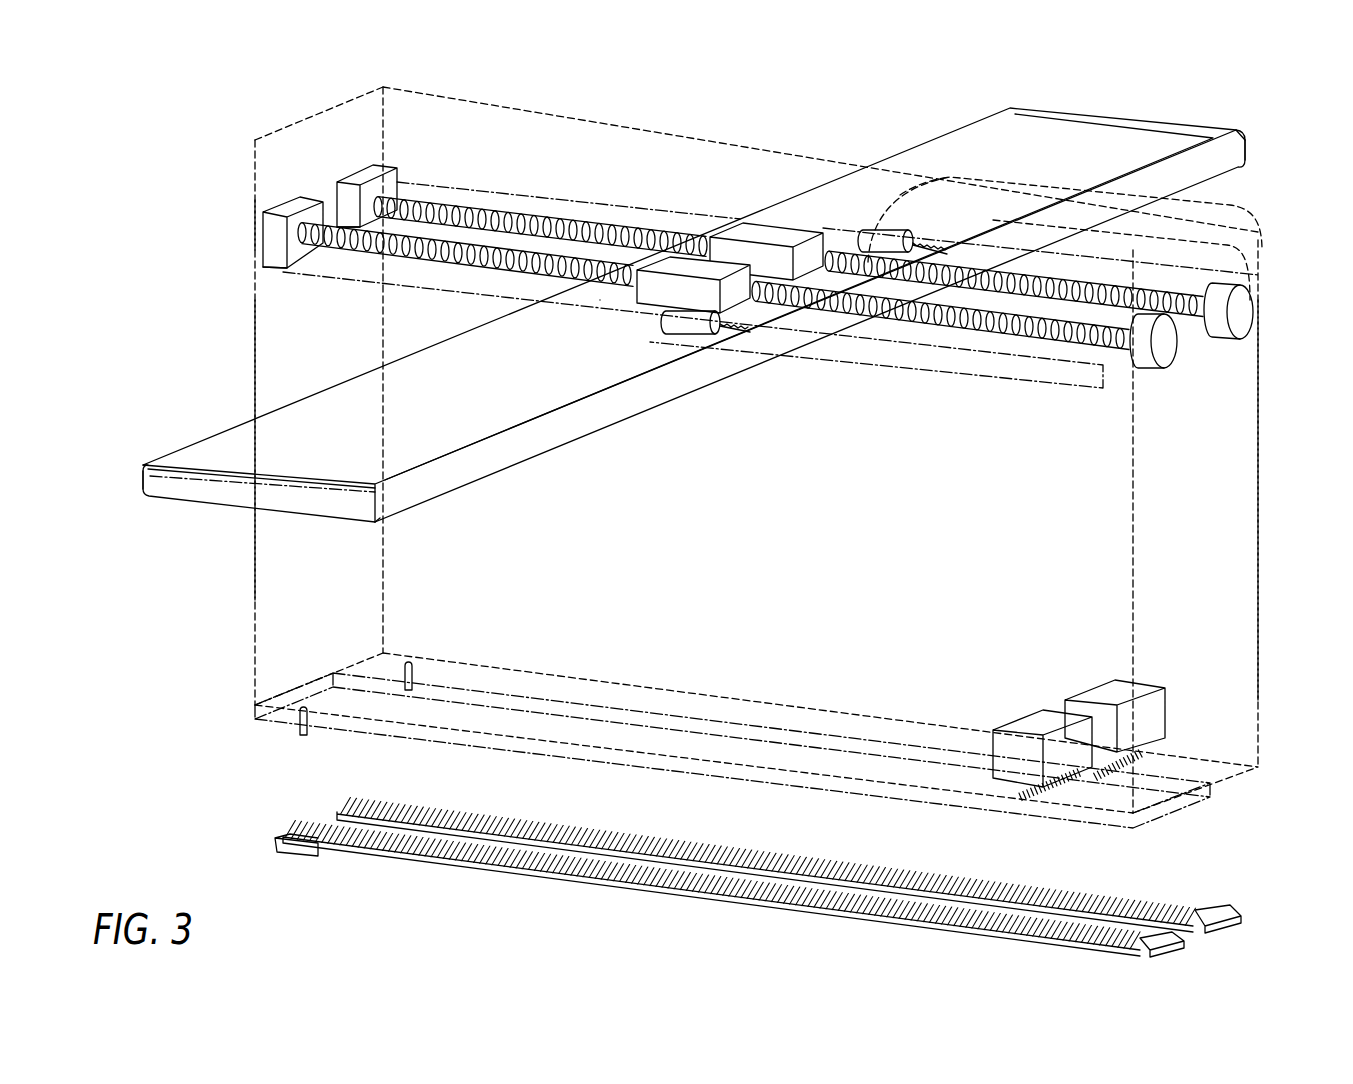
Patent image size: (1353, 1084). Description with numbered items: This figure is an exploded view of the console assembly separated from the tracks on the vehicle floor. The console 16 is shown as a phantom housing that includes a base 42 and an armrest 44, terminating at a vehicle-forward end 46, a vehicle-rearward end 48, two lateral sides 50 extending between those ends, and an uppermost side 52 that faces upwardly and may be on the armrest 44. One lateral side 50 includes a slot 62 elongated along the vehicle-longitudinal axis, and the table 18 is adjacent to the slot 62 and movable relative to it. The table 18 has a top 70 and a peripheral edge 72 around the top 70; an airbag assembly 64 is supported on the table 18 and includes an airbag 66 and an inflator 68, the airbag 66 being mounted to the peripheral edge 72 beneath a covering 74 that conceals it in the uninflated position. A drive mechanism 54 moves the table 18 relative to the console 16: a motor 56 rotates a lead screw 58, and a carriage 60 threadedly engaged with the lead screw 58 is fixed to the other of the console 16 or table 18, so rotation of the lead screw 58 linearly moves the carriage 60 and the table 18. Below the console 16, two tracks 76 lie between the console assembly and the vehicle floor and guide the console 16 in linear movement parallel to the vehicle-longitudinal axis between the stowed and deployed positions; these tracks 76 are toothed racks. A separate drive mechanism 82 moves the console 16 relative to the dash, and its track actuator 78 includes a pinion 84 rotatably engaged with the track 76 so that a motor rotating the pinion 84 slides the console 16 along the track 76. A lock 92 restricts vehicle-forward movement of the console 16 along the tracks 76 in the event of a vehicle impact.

The console 16 is at (1258, 490).
The table 18 is at (893, 150).
The base 42 is at (437, 585).
The armrest 44 is at (1252, 230).
The vehicle-forward end 46 is at (273, 163).
The vehicle-rearward end 48 is at (1245, 438).
The lateral sides 50 is at (430, 80).
The uppermost side 52 is at (577, 182).
The drive mechanism 54 is at (345, 163).
The motor 56 is at (385, 170).
The lead screw 58 is at (622, 230).
The carriage 60 is at (783, 227).
The slot 62 is at (972, 373).
The airbag assembly 64 is at (1208, 123).
The airbag 66 is at (1012, 108).
The inflator 68 is at (873, 232).
The top 70 is at (960, 150).
The peripheral edge 72 is at (1092, 125).
The covering 74 is at (1243, 134).
The track 76 is at (1172, 950).
The track actuator 78 is at (1073, 685).
The drive mechanism 82 is at (767, 884).
The pinion 84 is at (1120, 770).
The lock 92 is at (408, 692).